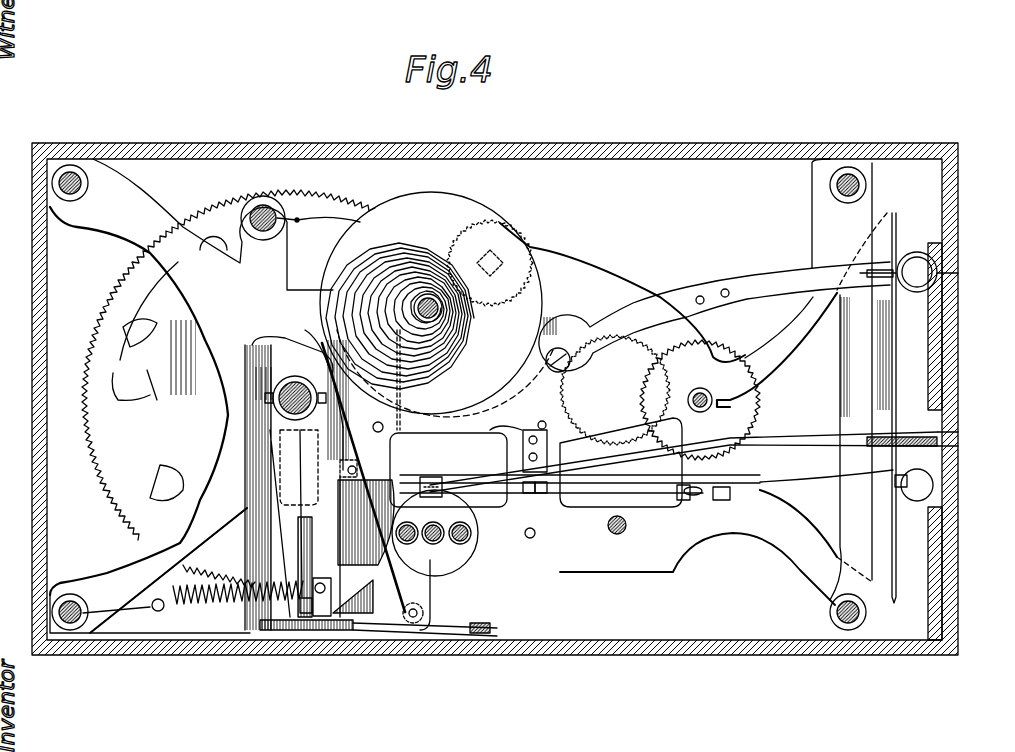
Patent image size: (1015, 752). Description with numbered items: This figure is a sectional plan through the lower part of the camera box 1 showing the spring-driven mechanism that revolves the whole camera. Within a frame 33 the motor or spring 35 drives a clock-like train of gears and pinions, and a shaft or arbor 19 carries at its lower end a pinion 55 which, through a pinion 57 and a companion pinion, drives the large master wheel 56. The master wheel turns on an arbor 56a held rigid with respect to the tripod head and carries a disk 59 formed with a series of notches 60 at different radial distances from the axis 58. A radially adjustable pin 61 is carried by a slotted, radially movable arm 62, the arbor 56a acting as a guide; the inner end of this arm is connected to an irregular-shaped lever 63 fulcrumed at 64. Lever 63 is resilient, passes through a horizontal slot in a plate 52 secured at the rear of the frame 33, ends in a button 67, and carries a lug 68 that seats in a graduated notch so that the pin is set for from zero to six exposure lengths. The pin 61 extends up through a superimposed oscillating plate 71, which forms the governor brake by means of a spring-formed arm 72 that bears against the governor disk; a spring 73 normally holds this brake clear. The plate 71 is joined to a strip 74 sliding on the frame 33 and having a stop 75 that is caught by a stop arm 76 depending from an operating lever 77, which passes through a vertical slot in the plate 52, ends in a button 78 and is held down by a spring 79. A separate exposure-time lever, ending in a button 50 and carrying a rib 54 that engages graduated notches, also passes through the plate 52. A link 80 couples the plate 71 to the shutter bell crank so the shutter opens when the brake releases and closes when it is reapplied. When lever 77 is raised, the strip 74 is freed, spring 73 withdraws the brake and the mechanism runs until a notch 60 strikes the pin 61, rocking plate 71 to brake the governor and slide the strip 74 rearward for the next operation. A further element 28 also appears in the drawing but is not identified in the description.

The camera box 1 is at (728, 143).
The frame 33 is at (606, 585).
The spring 35 is at (392, 258).
The notches 60 is at (147, 413).
The disk 59 is at (175, 372).
The master wheel 56 is at (112, 493).
The arbor 56a is at (265, 398).
The fulcrum 64 is at (305, 332).
The radially movable arm 62 is at (240, 663).
The brake arm 72 is at (388, 520).
The oscillating plate 71 is at (319, 567).
The adjustable pin 61 is at (318, 616).
The spring 73 is at (490, 534).
The operating lever 77 is at (432, 477).
The spring 79 is at (523, 455).
The axis 58 is at (488, 429).
The stop arm 76 is at (472, 545).
The stop 75 is at (470, 570).
The link 80 is at (388, 640).
The slide plate 28 is at (620, 468).
The strip 74 is at (592, 493).
The pinion 57 is at (615, 390).
The pinion 55 is at (762, 400).
The arbor 19 is at (708, 395).
The irregular-shaped lever 63 is at (754, 278).
The plate 52 is at (893, 215).
The button 67 is at (940, 273).
The lug 68 is at (866, 280).
The rib 54 is at (900, 432).
The button 50 is at (944, 440).
The operating button 78 is at (934, 487).